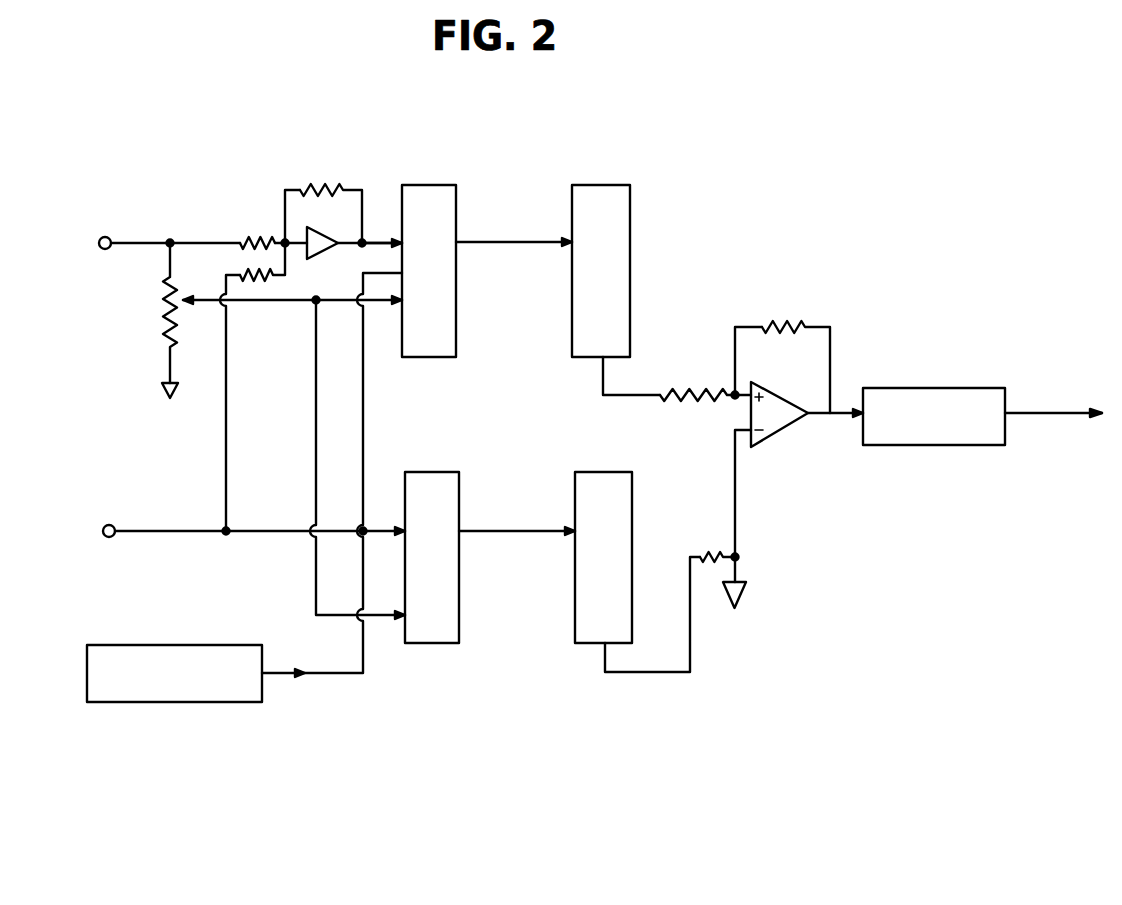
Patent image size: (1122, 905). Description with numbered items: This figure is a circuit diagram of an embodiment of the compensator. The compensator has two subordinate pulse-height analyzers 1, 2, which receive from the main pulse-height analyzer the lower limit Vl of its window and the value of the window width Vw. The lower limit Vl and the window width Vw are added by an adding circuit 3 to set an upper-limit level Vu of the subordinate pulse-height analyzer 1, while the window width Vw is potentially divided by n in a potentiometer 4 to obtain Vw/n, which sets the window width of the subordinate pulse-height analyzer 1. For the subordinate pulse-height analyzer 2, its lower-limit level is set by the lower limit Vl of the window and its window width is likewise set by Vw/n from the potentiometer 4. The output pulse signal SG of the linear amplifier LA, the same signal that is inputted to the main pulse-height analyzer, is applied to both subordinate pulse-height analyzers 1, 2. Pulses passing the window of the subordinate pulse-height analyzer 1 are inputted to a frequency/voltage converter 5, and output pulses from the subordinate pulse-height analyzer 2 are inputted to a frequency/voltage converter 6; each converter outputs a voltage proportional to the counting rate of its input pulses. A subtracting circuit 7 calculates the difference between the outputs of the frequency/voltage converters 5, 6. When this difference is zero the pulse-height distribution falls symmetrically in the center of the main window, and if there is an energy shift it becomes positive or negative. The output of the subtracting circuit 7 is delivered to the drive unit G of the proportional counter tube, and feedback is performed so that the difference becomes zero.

The subordinate pulse-height analyzer 1 is at (428, 185).
The subordinate pulse-height analyzer 2 is at (430, 472).
The adding circuit 3 is at (323, 220).
The potentiometer 4 is at (162, 293).
The frequency/voltage converter 5 is at (630, 240).
The frequency/voltage converter 6 is at (632, 522).
The subtracting circuit 7 is at (774, 372).
The drive unit G is at (950, 388).
The linear amplifier LA is at (185, 702).
The output pulse signal of the linear amplifier SG is at (332, 475).
The window width Vw is at (248, 232).
The upper-limit level Vu is at (382, 229).
The lower limit of the window Vl is at (251, 520).